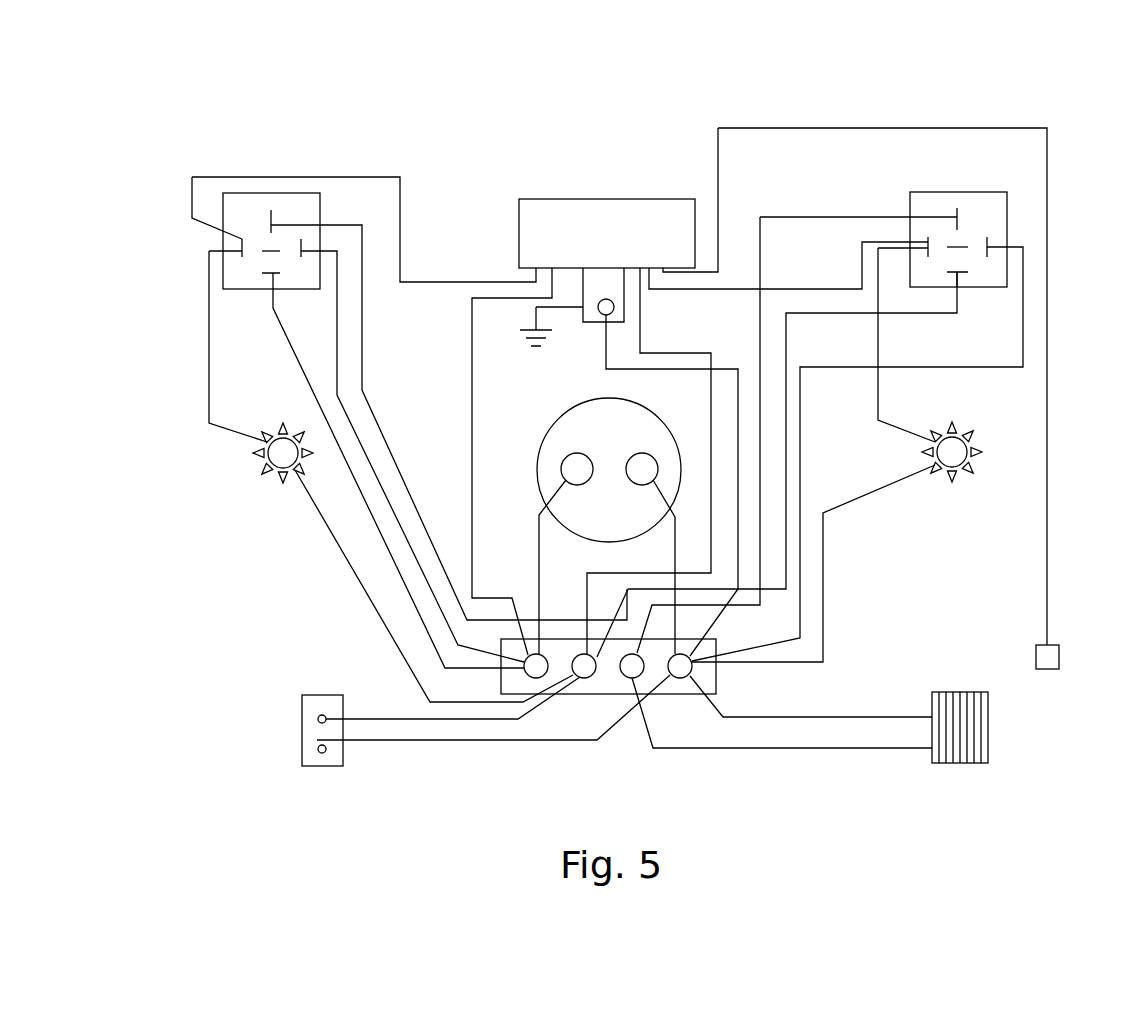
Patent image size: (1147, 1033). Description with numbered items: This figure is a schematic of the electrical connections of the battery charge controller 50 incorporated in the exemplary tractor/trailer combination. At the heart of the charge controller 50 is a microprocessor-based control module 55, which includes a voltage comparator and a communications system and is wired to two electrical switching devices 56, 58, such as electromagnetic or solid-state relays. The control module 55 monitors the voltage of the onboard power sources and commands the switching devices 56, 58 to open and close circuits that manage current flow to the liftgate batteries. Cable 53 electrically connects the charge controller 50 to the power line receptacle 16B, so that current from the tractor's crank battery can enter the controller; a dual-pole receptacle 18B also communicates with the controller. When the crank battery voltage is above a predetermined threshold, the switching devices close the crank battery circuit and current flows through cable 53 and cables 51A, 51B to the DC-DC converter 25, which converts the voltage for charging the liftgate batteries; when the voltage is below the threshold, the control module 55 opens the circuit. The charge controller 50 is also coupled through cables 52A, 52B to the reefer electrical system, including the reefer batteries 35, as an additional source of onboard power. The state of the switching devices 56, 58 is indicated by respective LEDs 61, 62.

The battery charge controller 50 is at (580, 145).
The control module 55 is at (667, 205).
The switching device 56 is at (286, 193).
The switching device 58 is at (977, 192).
The dual-pole receptacle 18B is at (570, 412).
The LED 61 is at (278, 478).
The LED 62 is at (950, 478).
The cable 53 is at (1047, 512).
The power line receptacle 16B is at (1060, 652).
The DC-DC converter 25 is at (980, 692).
The cable 51A is at (893, 717).
The cable 51B is at (830, 748).
The cable 52A is at (369, 718).
The cable 52B is at (368, 740).
The reefer batteries 35 is at (302, 740).